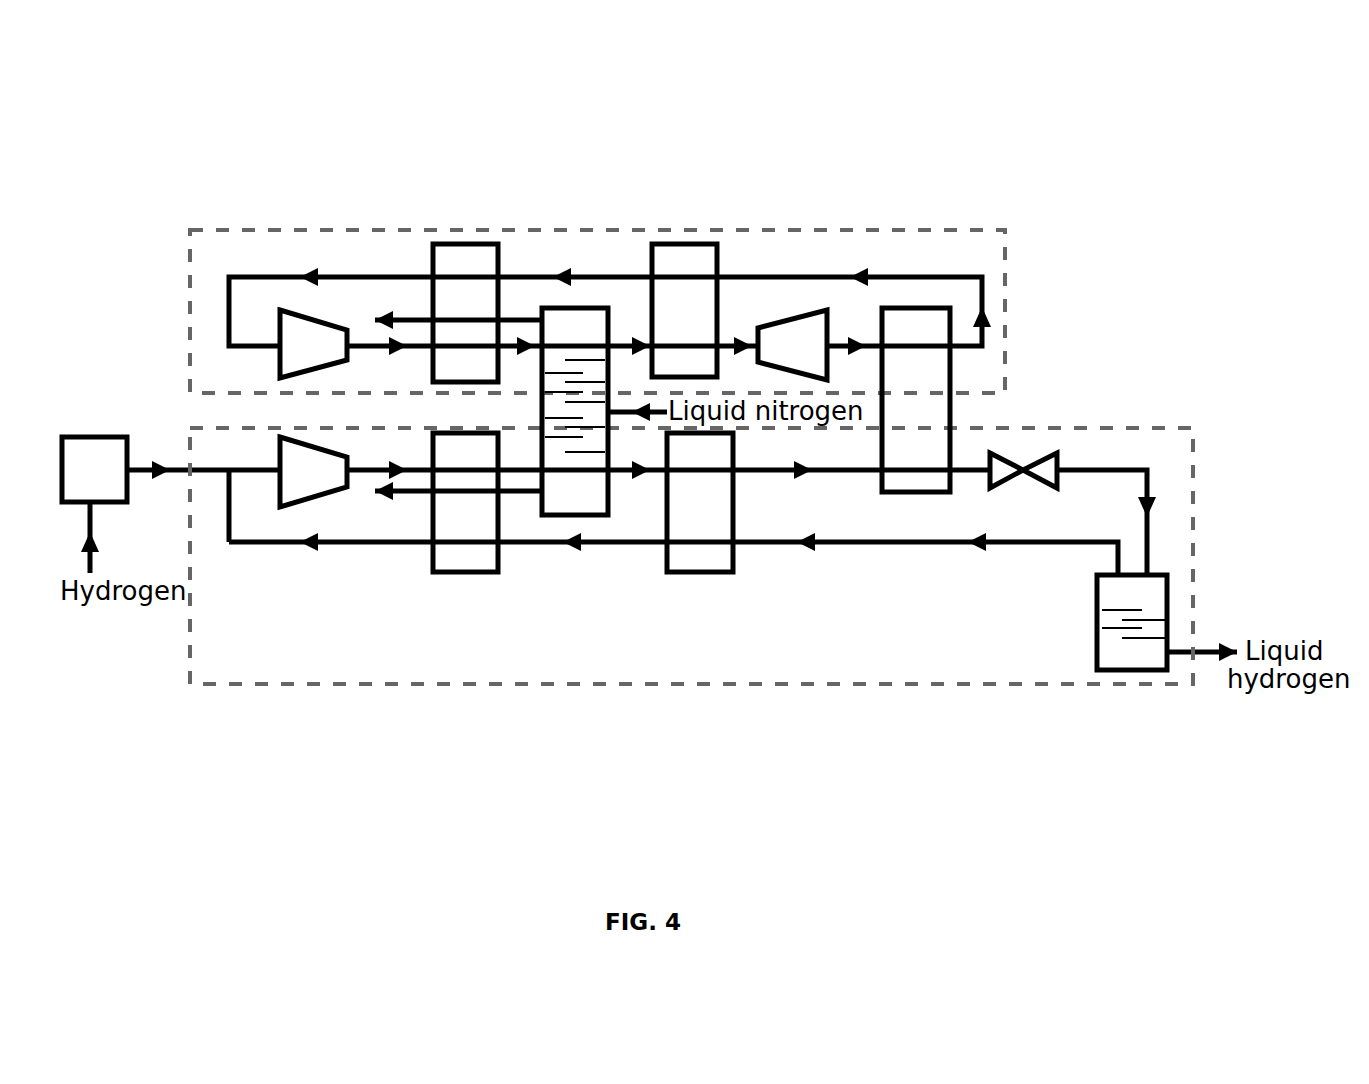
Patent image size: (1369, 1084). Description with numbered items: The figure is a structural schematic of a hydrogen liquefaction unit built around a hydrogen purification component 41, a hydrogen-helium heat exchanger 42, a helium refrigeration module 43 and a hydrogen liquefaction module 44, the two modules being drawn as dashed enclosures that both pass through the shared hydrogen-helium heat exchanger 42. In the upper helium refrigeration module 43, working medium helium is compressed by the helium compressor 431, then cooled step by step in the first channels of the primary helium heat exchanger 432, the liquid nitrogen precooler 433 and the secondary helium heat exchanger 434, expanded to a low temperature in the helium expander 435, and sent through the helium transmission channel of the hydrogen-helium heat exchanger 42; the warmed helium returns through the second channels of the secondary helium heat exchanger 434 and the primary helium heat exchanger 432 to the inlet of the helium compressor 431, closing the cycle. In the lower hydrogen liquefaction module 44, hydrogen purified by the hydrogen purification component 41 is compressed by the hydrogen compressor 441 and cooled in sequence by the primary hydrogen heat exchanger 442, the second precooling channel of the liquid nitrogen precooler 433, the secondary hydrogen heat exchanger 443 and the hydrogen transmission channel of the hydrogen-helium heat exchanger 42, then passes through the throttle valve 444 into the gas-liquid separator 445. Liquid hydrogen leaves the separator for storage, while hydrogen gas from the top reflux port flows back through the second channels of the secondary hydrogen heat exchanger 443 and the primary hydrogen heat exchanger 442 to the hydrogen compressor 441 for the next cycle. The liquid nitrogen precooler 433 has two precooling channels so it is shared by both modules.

The hydrogen purification component 41 is at (104, 426).
The hydrogen-helium heat exchanger 42 is at (929, 303).
The helium refrigeration module 43 is at (626, 311).
The hydrogen liquefaction module 44 is at (717, 553).
The helium compressor 431 is at (339, 311).
The primary helium heat exchanger 432 is at (465, 230).
The liquid nitrogen precooler 433 is at (590, 298).
The secondary helium heat exchanger 434 is at (692, 228).
The helium expander 435 is at (796, 304).
The hydrogen compressor 441 is at (317, 503).
The primary hydrogen heat exchanger 442 is at (472, 582).
The secondary hydrogen heat exchanger 443 is at (693, 582).
The throttle valve 444 is at (1030, 485).
The gas-liquid separator 445 is at (1118, 650).